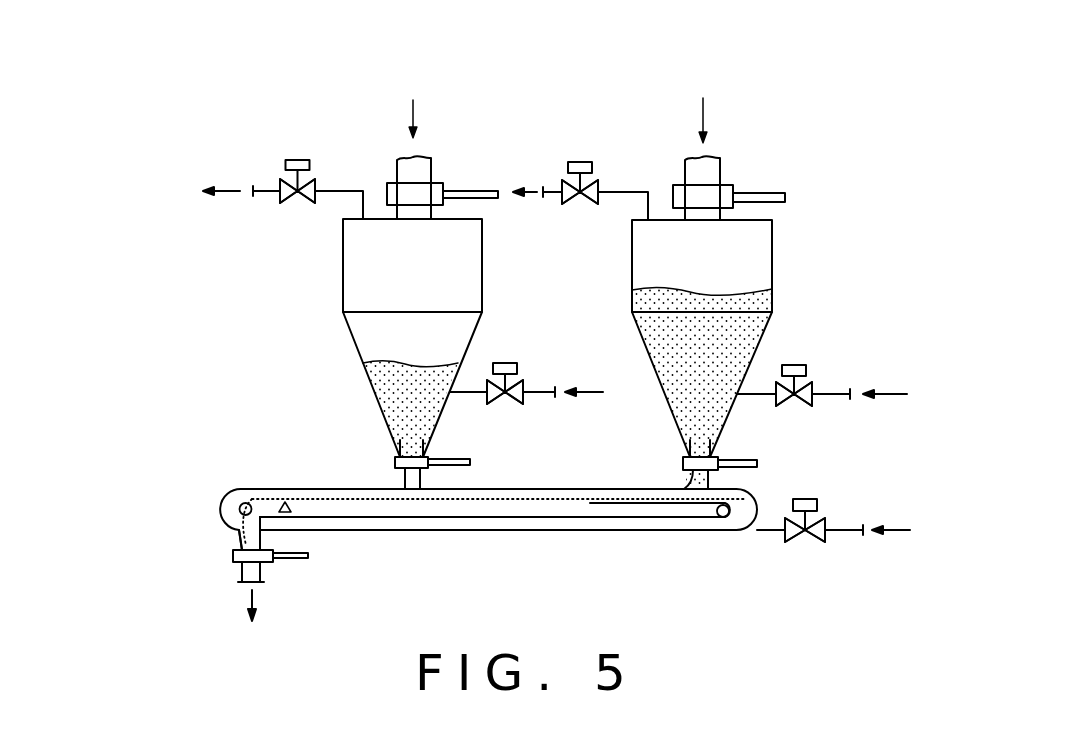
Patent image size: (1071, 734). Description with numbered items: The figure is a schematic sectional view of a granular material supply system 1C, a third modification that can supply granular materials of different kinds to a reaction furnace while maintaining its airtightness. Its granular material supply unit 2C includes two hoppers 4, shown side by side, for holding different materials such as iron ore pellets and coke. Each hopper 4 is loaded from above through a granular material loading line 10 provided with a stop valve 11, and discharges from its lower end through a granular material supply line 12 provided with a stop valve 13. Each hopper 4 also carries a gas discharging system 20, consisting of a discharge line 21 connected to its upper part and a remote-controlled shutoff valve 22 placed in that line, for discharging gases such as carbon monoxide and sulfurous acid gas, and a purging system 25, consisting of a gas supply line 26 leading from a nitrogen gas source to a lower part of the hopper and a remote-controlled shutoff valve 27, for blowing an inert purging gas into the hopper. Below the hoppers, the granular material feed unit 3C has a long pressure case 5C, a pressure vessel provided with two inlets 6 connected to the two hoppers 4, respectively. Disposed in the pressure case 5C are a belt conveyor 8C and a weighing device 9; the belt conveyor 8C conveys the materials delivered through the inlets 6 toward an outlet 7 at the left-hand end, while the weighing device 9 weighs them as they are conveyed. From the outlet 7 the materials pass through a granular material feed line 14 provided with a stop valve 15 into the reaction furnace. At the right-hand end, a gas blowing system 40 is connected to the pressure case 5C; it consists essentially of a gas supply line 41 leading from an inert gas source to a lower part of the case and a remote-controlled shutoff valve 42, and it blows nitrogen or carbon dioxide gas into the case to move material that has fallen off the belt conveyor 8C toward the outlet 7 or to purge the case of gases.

The granular material supply system 1C is at (313, 118).
The granular material supply unit 2C is at (333, 313).
The granular material feed unit 3C is at (212, 501).
The hopper 4 is at (482, 290).
The pressure case 5C is at (235, 486).
The inlet 6 is at (413, 491).
The outlet 7 is at (263, 540).
The belt conveyor 8C is at (553, 532).
The weighing device 9 is at (283, 495).
The granular material loading line 10 is at (432, 168).
The stop valve 11 is at (387, 193).
The granular material supply line 12 is at (405, 471).
The stop valve 13 is at (397, 455).
The granular material feed line 14 is at (243, 542).
The stop valve 15 is at (233, 557).
The gas discharging system 20 is at (278, 156).
The discharge line 21 is at (262, 196).
The shutoff valve 22 is at (300, 204).
The purging system 25 is at (523, 357).
The gas supply line 26 is at (540, 399).
The shutoff valve 27 is at (502, 405).
The gas blowing system 40 is at (845, 501).
The gas supply line 41 is at (845, 534).
The shutoff valve 42 is at (798, 543).